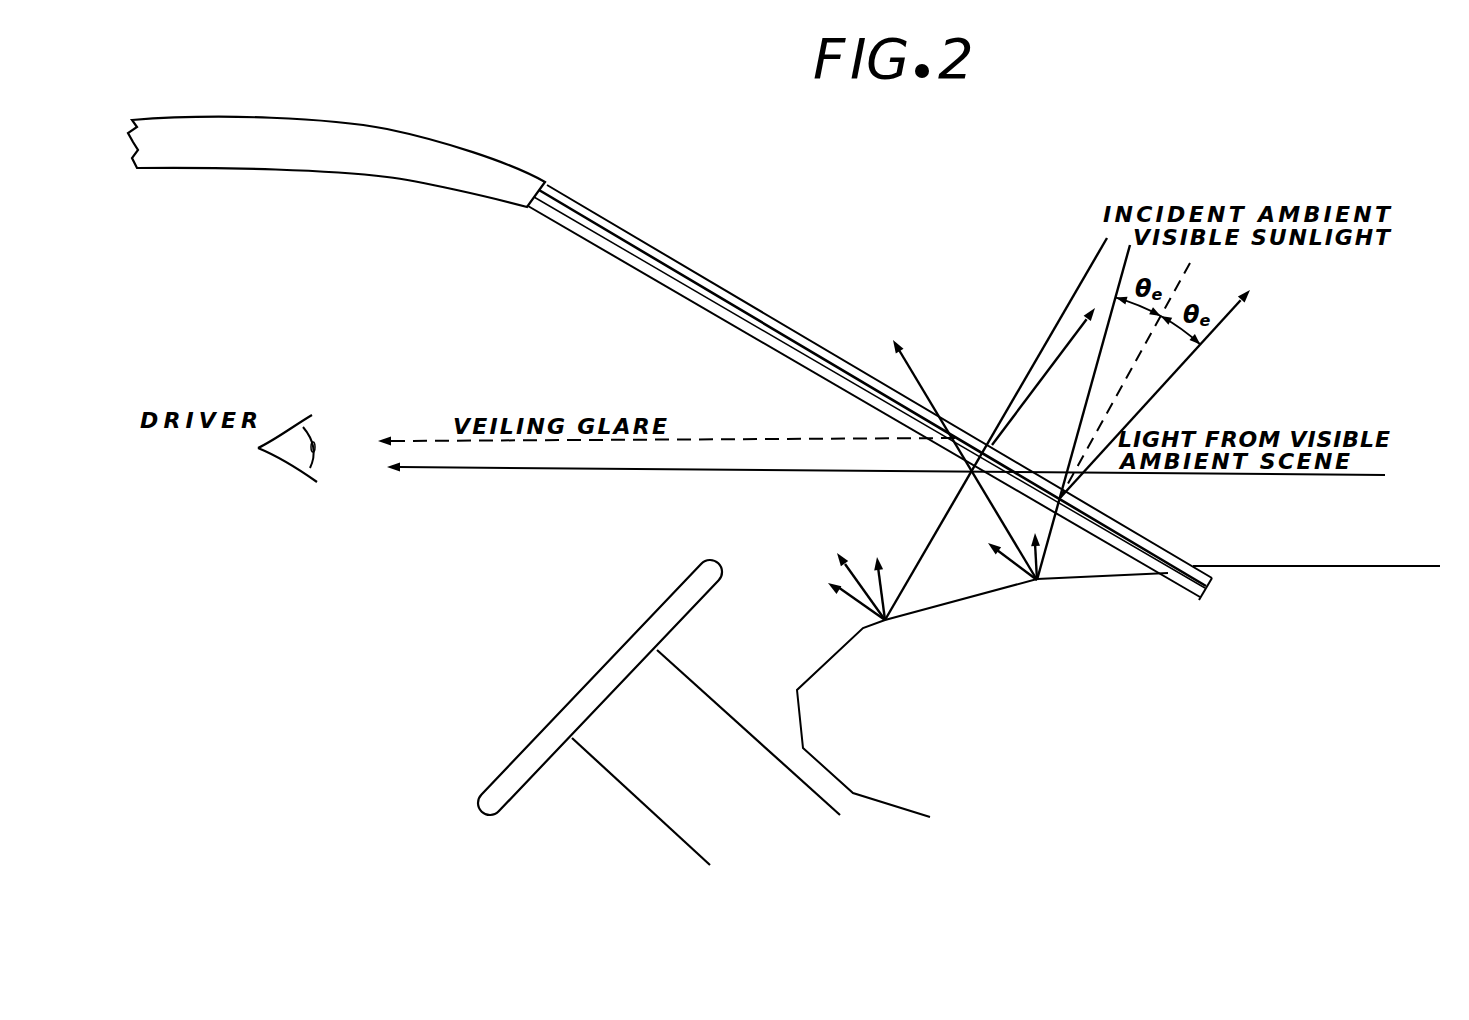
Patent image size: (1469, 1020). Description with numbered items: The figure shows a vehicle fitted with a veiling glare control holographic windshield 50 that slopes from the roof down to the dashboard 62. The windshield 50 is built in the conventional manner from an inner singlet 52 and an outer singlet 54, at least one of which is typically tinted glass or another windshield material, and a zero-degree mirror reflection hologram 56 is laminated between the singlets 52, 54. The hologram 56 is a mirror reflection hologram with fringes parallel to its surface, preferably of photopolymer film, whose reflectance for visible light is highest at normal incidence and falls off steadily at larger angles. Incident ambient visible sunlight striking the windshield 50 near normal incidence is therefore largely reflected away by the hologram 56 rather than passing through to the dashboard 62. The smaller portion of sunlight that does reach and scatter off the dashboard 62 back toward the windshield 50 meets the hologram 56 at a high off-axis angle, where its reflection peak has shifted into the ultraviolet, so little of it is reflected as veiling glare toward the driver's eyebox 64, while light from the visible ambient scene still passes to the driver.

The veiling glare control holographic windshield 50 is at (870, 391).
The inner singlet 52 is at (663, 283).
The outer singlet 54 is at (617, 228).
The zero-degree mirror reflection hologram 56 is at (620, 245).
The vehicle dashboard 62 is at (922, 610).
The driver's eyebox 64 is at (298, 428).